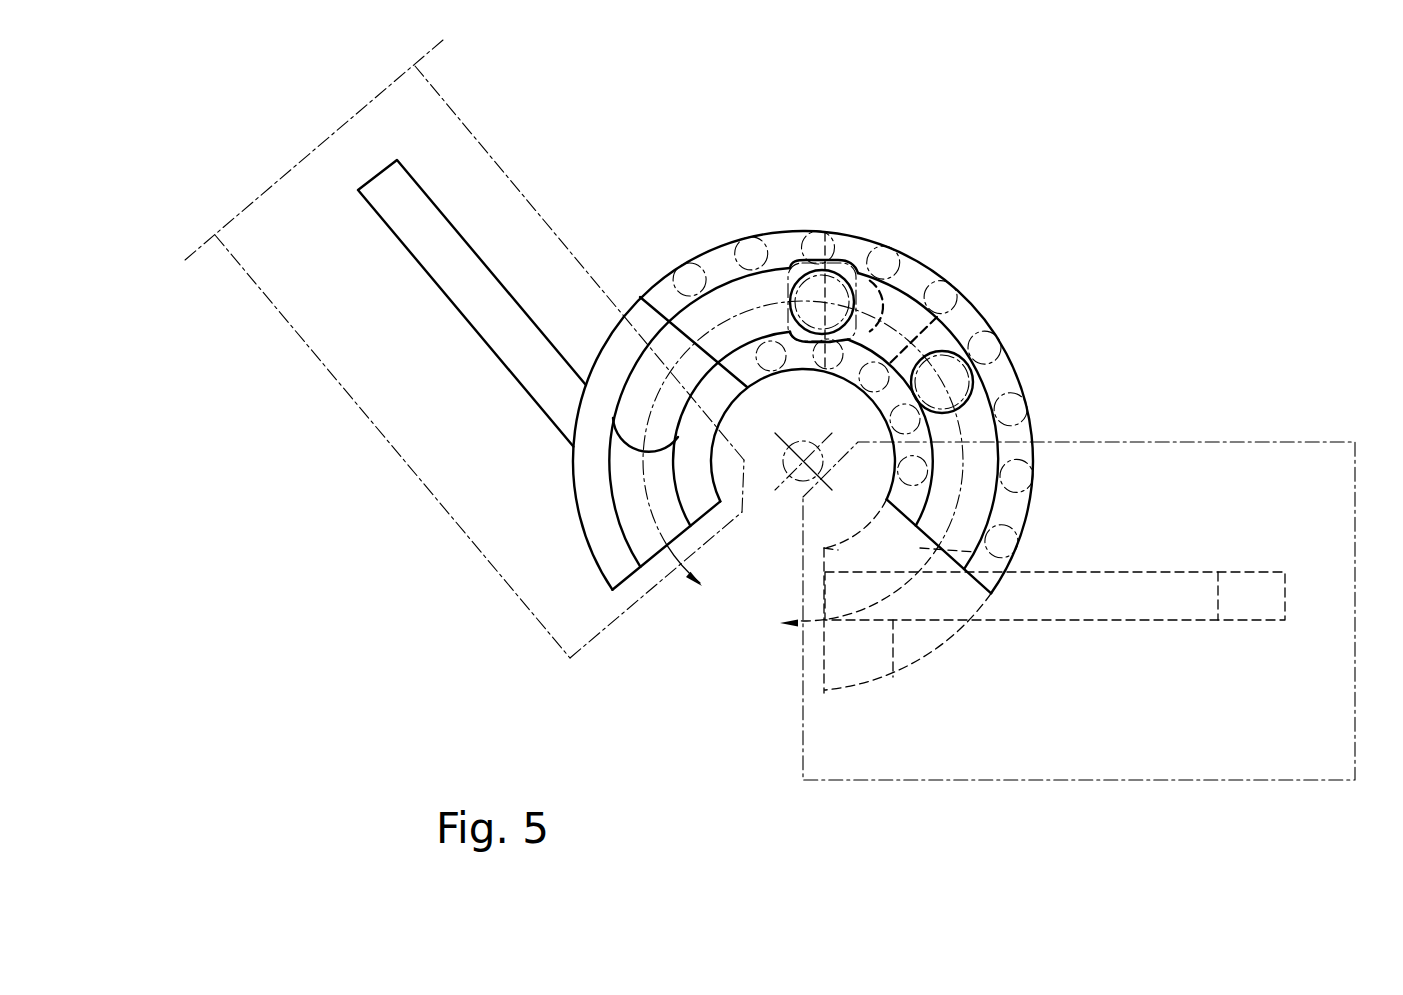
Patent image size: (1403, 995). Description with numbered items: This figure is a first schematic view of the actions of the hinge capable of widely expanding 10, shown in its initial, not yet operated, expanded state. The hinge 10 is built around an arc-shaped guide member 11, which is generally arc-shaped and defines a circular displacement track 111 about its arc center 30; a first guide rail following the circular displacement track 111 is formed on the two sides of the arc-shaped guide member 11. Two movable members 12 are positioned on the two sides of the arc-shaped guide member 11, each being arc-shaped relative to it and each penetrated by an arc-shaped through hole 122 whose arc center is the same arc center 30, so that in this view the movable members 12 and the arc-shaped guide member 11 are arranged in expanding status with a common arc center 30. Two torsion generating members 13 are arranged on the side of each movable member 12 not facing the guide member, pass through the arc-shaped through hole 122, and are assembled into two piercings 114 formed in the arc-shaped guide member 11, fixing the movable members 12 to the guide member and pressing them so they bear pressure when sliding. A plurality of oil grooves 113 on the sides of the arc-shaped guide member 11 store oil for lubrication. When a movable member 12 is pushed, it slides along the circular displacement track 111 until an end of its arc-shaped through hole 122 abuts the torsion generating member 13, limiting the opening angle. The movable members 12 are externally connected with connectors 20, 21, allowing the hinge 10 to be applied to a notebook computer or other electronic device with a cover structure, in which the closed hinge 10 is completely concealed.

The hinge capable of widely expanding 10 is at (1383, 118).
The arc-shaped guide member 11 is at (783, 235).
The circular displacement track 111 is at (657, 530).
The oil grooves 113 is at (913, 473).
The piercings 114 is at (950, 792).
The movable members 12 is at (569, 482).
The arc-shaped through hole 122 is at (637, 385).
The torsion generating members 13 is at (961, 355).
The connector 20 is at (370, 420).
The connector 21 is at (1250, 440).
The arc center 30 is at (798, 485).